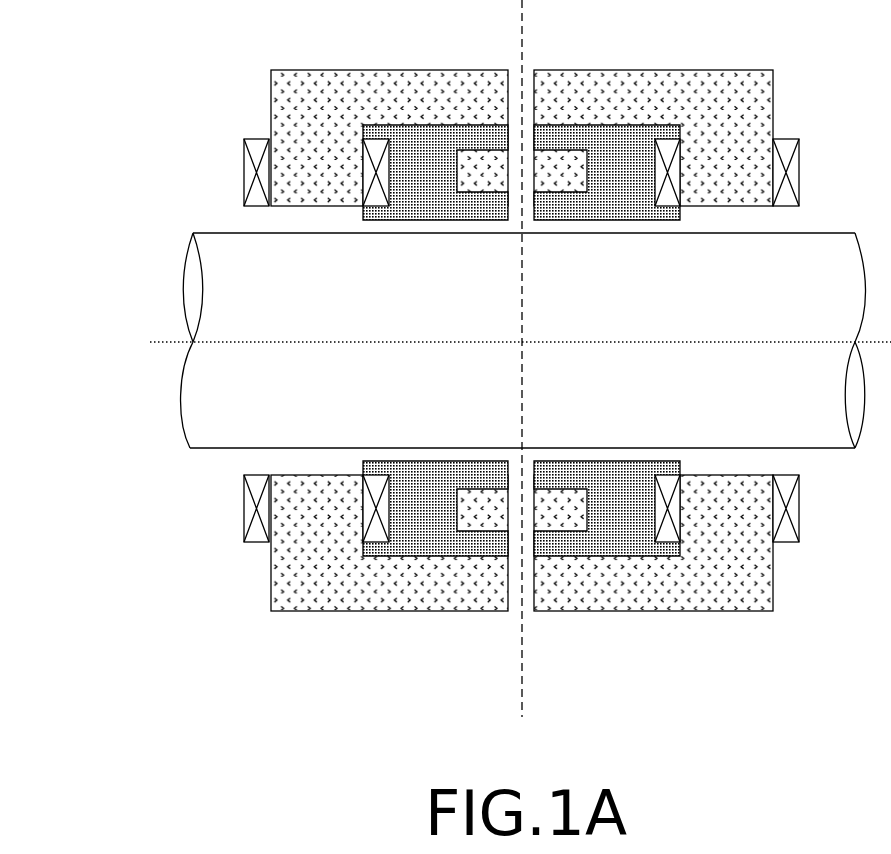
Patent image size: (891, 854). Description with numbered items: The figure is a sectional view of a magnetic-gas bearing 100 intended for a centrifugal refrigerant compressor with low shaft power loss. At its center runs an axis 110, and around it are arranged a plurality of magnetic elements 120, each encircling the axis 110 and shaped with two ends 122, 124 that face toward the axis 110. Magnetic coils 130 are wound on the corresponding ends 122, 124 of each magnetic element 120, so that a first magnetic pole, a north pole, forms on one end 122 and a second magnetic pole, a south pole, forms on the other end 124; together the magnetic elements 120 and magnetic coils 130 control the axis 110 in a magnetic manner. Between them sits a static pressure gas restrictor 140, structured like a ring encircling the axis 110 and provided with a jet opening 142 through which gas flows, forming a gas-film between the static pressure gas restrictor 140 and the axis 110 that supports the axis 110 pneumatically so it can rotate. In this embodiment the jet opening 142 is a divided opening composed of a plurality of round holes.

The magnetic-gas bearing 100 is at (752, 792).
The axis 110 is at (200, 396).
The magnetic element 120 is at (302, 93).
The end of magnetic element 122 is at (300, 174).
The end of magnetic element 124 is at (743, 188).
The magnetic coil 130 is at (377, 139).
The static pressure gas restrictor 140 is at (438, 150).
The jet opening 142 is at (523, 222).